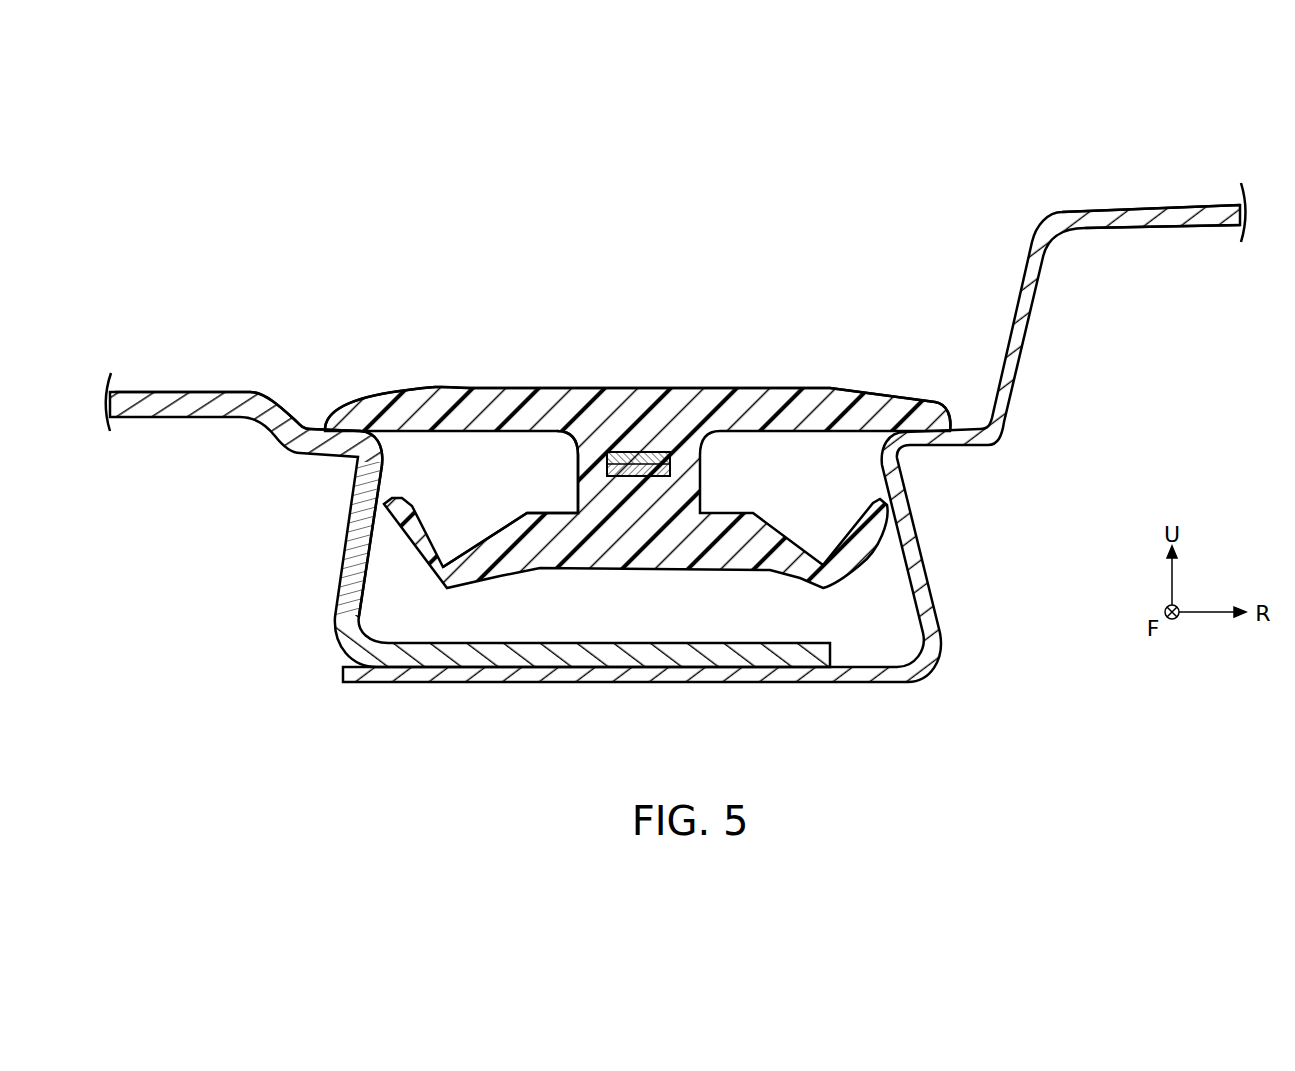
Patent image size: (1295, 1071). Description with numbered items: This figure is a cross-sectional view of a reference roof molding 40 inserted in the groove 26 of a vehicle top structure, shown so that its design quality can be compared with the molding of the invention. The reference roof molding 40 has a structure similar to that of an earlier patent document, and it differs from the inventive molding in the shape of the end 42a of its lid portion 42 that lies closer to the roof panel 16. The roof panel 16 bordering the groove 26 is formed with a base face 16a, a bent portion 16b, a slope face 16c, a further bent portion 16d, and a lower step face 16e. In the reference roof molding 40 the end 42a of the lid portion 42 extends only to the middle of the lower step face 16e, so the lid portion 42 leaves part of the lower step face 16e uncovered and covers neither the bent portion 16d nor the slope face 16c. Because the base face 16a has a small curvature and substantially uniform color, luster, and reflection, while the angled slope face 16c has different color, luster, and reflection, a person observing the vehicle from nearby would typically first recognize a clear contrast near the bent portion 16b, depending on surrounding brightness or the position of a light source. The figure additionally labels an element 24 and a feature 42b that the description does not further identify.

The roof panel 16 is at (142, 390).
The base face 16a is at (160, 390).
The bent portion 16b is at (264, 392).
The slope face 16c is at (308, 428).
The bent portion 16d is at (320, 428).
The lower step face 16e is at (328, 428).
The floor panel flange 24 is at (1220, 200).
The groove 26 is at (606, 629).
The reference roof molding 40 is at (684, 388).
The lid portion 42 is at (590, 387).
The end of the lid portion 42a is at (333, 420).
The recess / pocket of bracket 42b is at (462, 433).